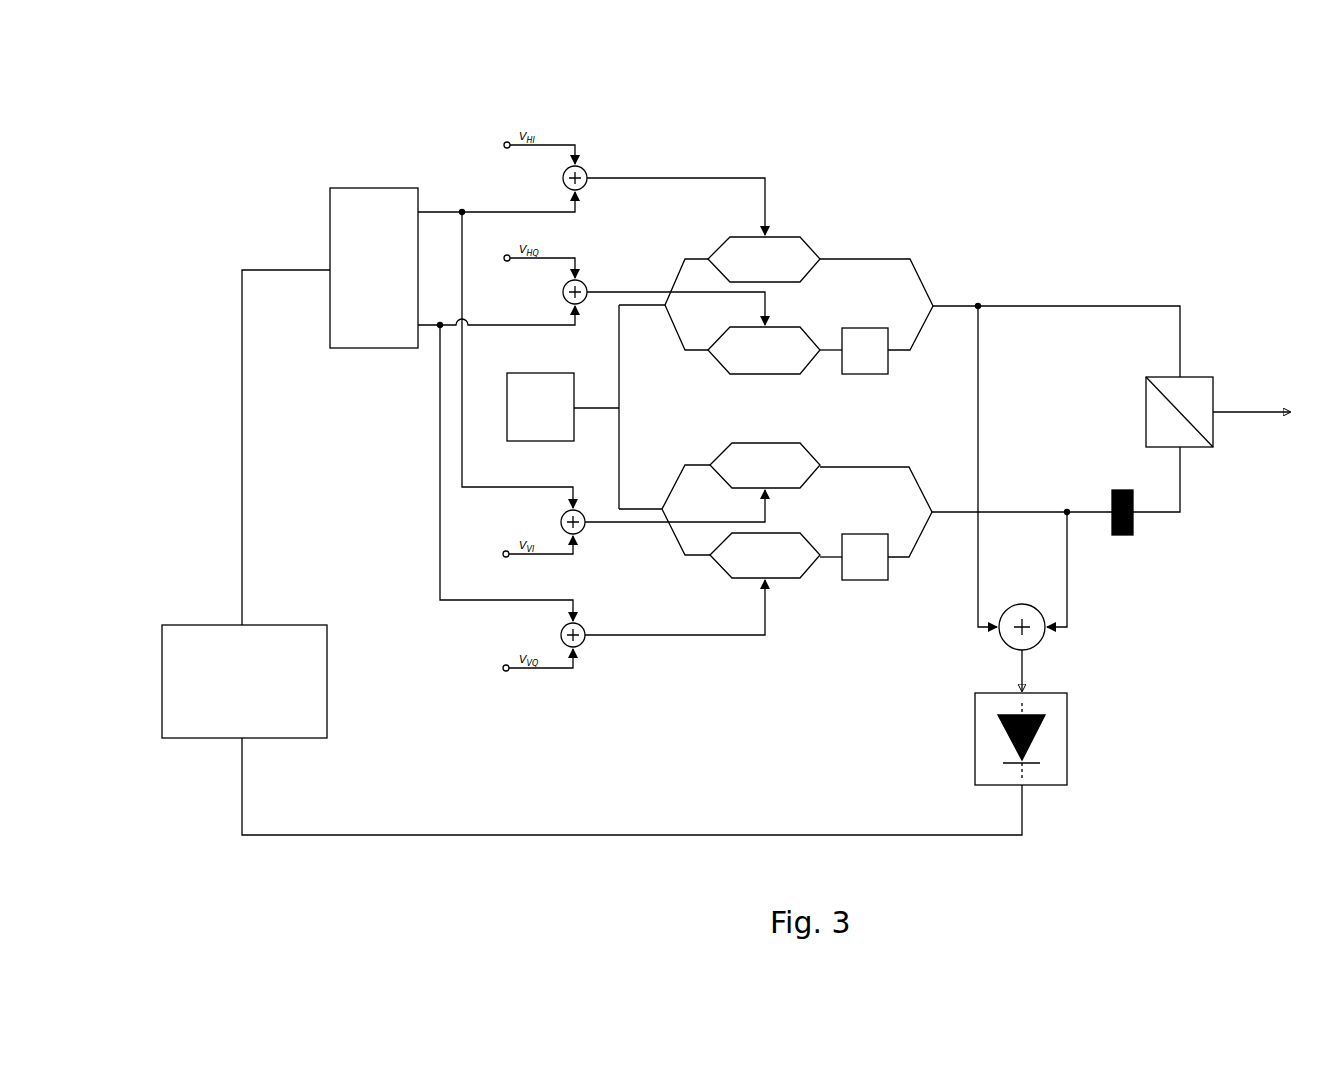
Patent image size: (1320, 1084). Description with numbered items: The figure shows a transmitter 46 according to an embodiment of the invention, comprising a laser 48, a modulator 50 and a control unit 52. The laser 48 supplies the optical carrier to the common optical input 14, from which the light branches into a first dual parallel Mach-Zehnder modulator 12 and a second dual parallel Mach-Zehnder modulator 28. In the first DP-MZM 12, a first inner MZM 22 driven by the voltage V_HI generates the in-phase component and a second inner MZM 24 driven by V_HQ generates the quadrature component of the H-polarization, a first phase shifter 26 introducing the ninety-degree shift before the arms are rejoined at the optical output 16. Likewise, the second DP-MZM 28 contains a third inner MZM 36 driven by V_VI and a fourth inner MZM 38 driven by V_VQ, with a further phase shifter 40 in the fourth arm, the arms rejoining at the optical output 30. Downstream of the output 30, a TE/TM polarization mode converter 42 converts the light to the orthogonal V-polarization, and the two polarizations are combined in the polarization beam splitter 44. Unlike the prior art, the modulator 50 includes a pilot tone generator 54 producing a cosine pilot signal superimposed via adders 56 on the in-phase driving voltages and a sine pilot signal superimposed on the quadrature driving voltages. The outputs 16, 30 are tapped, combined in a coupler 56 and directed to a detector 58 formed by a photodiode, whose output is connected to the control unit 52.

The first dual parallel Mach-Zehnder modulator 12 is at (914, 252).
The optical input 14 is at (622, 350).
The optical output 16 is at (950, 298).
The first inner MZM 22 is at (785, 240).
The second inner MZM 24 is at (785, 333).
The first phase shifter 26 is at (880, 374).
The second dual parallel Mach-Zehnder modulator 28 is at (892, 462).
The optical output 30 is at (946, 514).
The third inner MZM 36 is at (792, 443).
The fourth inner MZM 38 is at (792, 580).
The phase shifter 40 is at (880, 580).
The TE/TM polarization mode converter 42 is at (1140, 530).
The polarization beam splitter/combiner 44 is at (1214, 384).
The transmitter 46 is at (230, 150).
The laser 48 is at (533, 441).
The modulator 50 is at (895, 220).
The control unit 52 is at (327, 718).
The pilot tone generator 54 is at (351, 349).
The adder / coupler 56 is at (1040, 640).
The detector 58 is at (1068, 768).